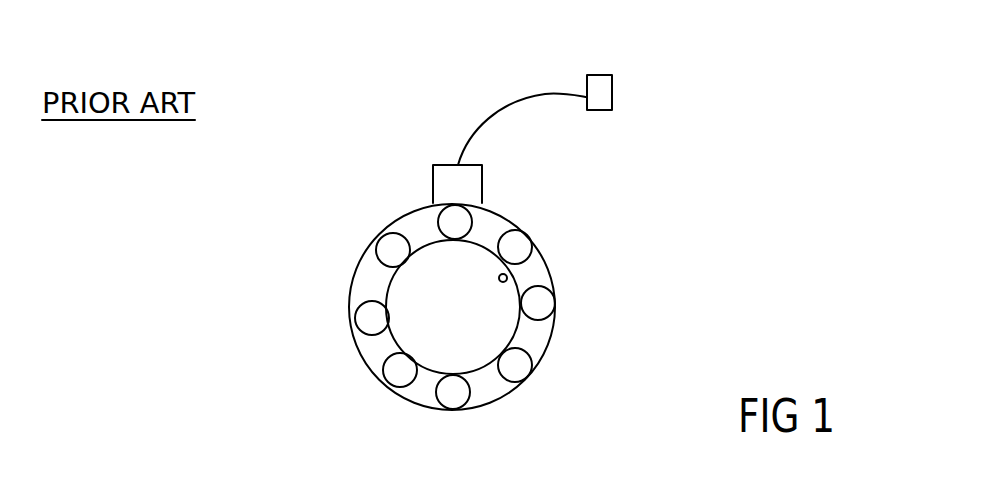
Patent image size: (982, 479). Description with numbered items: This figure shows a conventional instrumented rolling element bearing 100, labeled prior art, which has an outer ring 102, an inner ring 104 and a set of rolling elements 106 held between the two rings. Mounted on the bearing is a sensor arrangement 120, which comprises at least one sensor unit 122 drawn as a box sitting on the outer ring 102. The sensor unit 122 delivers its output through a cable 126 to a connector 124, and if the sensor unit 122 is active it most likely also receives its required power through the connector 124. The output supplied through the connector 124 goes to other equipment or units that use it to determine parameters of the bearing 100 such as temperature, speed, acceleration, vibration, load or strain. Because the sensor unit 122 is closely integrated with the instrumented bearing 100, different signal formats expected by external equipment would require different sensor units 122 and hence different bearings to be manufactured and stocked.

The rolling element bearing 100 is at (439, 307).
The outer ring 102 is at (552, 341).
The inner ring 104 is at (508, 282).
The rolling elements 106 is at (543, 300).
The sensor arrangement 120 is at (575, 138).
The sensor unit 122 is at (428, 187).
The connector to other equipment/units 124 is at (602, 73).
The cable/conductor between sensor and connector 126 is at (502, 108).